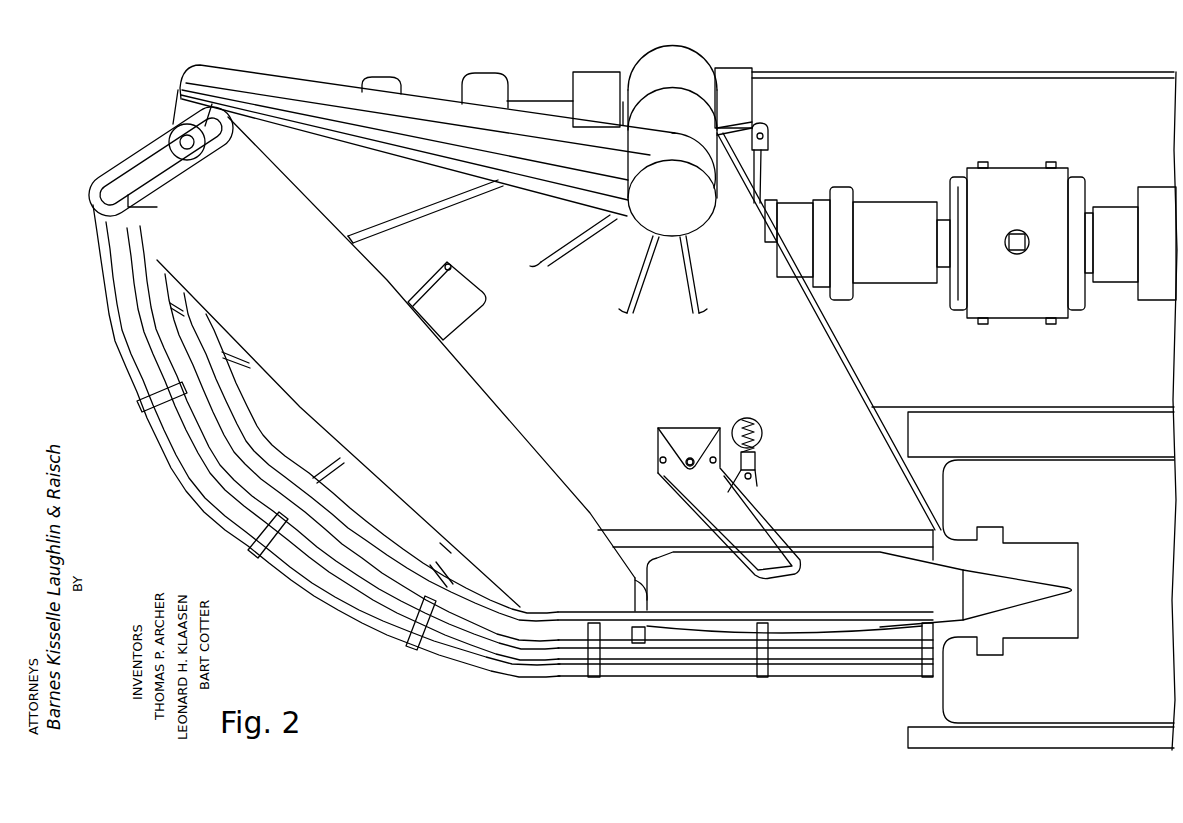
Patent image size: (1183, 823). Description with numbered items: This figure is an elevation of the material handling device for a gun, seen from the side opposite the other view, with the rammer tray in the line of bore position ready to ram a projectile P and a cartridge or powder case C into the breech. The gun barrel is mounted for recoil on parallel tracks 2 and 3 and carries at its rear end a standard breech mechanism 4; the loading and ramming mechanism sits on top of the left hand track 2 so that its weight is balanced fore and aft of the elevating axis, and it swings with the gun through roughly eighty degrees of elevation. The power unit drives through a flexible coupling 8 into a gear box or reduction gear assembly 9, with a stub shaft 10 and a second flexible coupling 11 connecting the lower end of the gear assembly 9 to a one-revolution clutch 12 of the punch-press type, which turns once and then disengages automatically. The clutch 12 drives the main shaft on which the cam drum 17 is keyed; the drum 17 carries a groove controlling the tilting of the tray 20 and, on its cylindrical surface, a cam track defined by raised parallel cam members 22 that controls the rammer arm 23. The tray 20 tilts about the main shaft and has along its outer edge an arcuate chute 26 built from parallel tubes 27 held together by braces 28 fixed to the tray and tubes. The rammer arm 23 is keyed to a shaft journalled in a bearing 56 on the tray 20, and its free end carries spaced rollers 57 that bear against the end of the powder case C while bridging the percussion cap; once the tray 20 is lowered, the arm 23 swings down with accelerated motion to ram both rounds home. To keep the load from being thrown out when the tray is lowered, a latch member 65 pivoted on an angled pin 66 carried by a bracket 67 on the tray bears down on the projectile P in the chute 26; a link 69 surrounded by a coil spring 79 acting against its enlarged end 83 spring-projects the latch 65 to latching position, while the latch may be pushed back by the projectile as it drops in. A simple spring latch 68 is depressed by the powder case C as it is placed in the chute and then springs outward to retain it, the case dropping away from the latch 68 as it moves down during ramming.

The left hand track 2 is at (910, 437).
The track 3 is at (908, 737).
The breech mechanism 4 is at (943, 700).
The flexible coupling 8 is at (1152, 193).
The gear box 9 is at (1016, 180).
The stub shaft 10 is at (942, 263).
The flexible coupling 11 is at (903, 212).
The clutch 12 is at (790, 212).
The drum 17 is at (532, 103).
The tray 20 is at (847, 398).
The cam members 22 is at (477, 77).
The rammer arm 23 is at (310, 87).
The chute 26 is at (178, 473).
The tubes 27 is at (508, 650).
The braces 28 is at (762, 662).
The journal bearing 56 is at (677, 110).
The rollers 57 is at (174, 130).
The latch member 65 is at (767, 517).
The pivot pin 66 is at (687, 466).
The bracket 67 is at (692, 435).
The spring latch 68 is at (468, 310).
The link 69 is at (762, 435).
The coil spring 79 is at (757, 425).
The enlarged end 83 is at (755, 460).
The cartridge C is at (492, 392).
The projectile P is at (1013, 573).